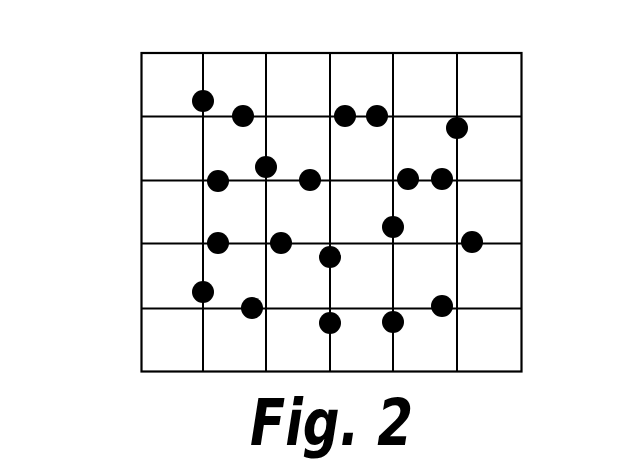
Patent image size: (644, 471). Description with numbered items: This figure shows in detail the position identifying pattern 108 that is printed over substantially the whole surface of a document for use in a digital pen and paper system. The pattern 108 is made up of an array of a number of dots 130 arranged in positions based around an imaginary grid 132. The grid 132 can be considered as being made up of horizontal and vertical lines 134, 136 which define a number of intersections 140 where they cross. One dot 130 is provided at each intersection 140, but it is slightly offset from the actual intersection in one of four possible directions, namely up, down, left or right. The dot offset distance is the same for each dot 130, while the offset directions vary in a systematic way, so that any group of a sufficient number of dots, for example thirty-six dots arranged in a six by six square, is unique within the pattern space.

The position identifying pattern 108 is at (465, 183).
The dots 130 is at (468, 127).
The imaginary grid 132 is at (393, 89).
The horizontal lines 134 is at (172, 120).
The vertical lines 136 is at (203, 78).
The intersections 140 is at (268, 115).